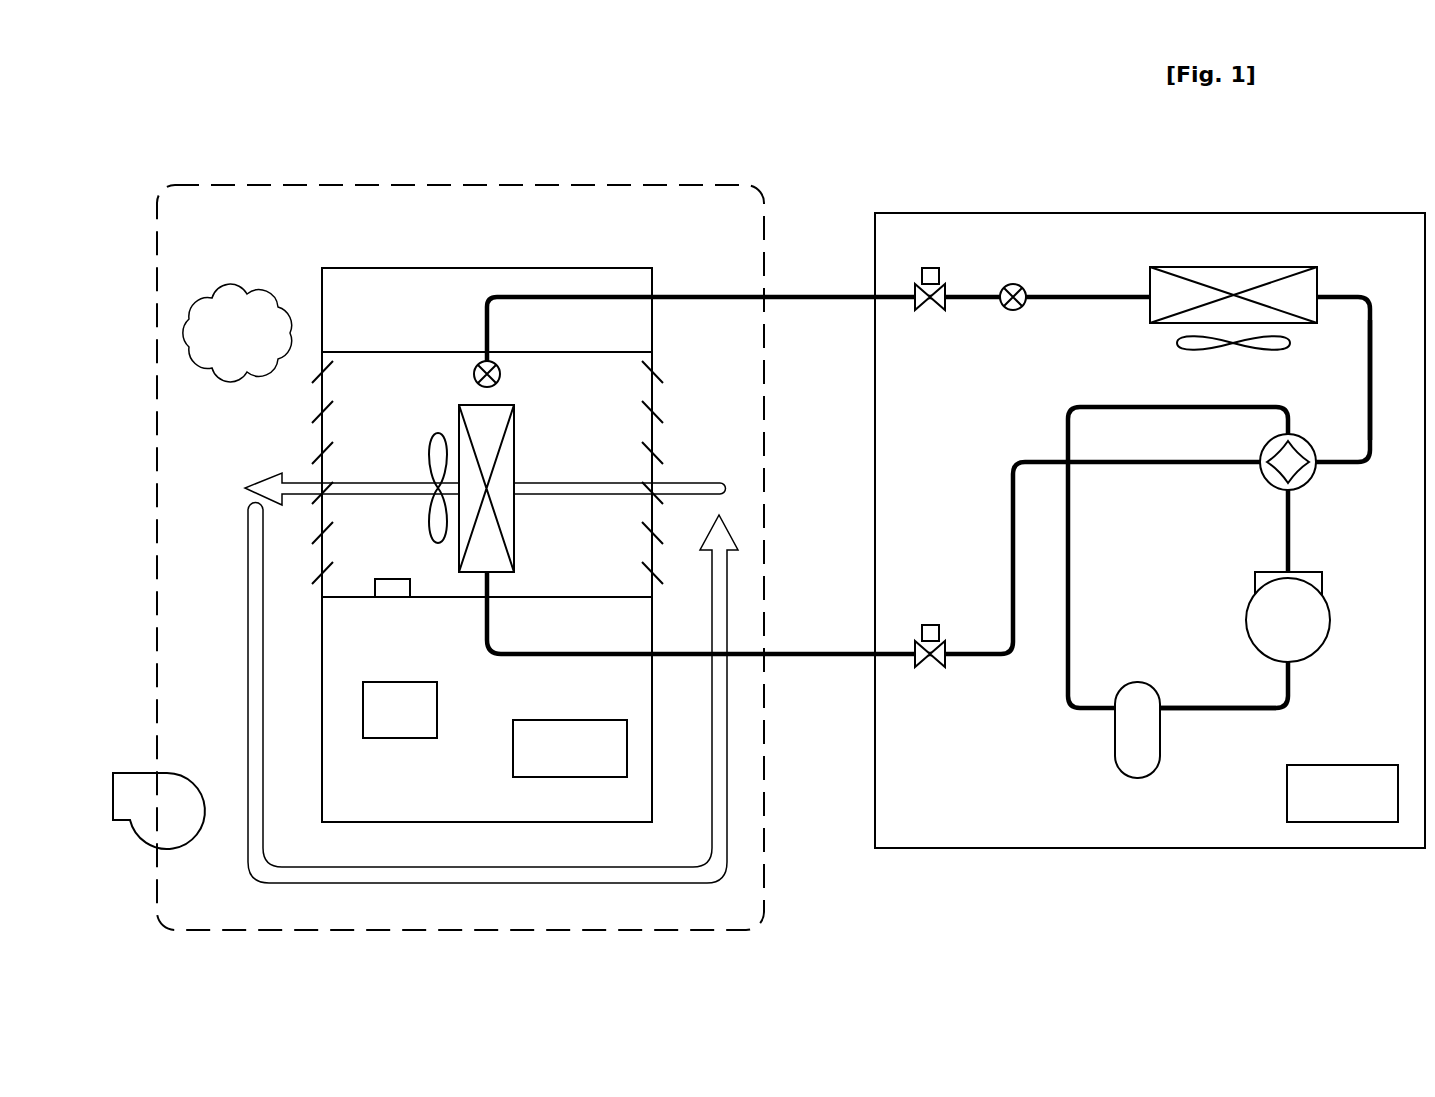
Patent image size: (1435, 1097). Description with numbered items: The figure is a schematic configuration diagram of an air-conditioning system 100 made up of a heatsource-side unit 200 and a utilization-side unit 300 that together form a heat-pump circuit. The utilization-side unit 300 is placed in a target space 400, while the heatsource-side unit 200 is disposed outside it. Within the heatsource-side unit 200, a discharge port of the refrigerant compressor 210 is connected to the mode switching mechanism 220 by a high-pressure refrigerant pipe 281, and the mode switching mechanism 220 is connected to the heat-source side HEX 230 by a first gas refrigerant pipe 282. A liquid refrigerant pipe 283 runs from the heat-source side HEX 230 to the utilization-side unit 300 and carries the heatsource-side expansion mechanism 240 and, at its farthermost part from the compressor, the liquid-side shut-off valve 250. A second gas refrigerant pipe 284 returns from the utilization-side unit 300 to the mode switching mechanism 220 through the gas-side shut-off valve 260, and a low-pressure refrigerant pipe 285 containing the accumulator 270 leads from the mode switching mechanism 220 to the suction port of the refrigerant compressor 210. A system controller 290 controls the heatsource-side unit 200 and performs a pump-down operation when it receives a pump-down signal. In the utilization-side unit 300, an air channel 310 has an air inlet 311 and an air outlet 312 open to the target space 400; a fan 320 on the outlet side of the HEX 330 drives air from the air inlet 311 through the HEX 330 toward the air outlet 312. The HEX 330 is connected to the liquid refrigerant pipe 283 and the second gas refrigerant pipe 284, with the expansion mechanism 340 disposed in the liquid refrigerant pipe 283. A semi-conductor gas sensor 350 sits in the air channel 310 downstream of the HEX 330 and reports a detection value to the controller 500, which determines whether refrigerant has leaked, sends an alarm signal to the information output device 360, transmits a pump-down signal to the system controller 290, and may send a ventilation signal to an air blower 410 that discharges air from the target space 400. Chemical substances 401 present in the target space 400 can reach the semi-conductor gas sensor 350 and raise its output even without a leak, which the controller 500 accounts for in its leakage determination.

The air-conditioning system 100 is at (812, 126).
The heatsource-side unit 200 is at (1272, 213).
The refrigerant compressor 210 is at (1320, 650).
The mode switching mechanism 220 is at (1308, 482).
The heat-source side HEX 230 is at (1308, 267).
The heatsource-side expansion mechanism 240 is at (1013, 284).
The liquid-side shut-off valve 250 is at (930, 268).
The gas-side shut-off valve 260 is at (930, 625).
The accumulator 270 is at (1138, 778).
The high-pressure refrigerant pipe 281 is at (1286, 542).
The first gas refrigerant pipe 282 is at (1368, 392).
The liquid refrigerant pipe 283 is at (830, 290).
The second gas refrigerant pipe 284 is at (830, 646).
The low-pressure refrigerant pipe 285 is at (1200, 708).
The system controller 290 is at (1345, 765).
The utilization-side unit 300 is at (574, 268).
The air channel 310 is at (592, 542).
The air inlet 311 is at (662, 440).
The air outlet 312 is at (312, 438).
The fan 320 is at (435, 433).
The heat exchanger (HEX) 330 is at (516, 447).
The expansion mechanism 340 is at (503, 374).
The semi-conductor gas sensor 350 is at (390, 579).
The information output device 360 is at (413, 682).
The target space 400 is at (322, 185).
The chemical substances 401 is at (240, 295).
The air blower 410 is at (137, 773).
The controller 500 is at (563, 720).